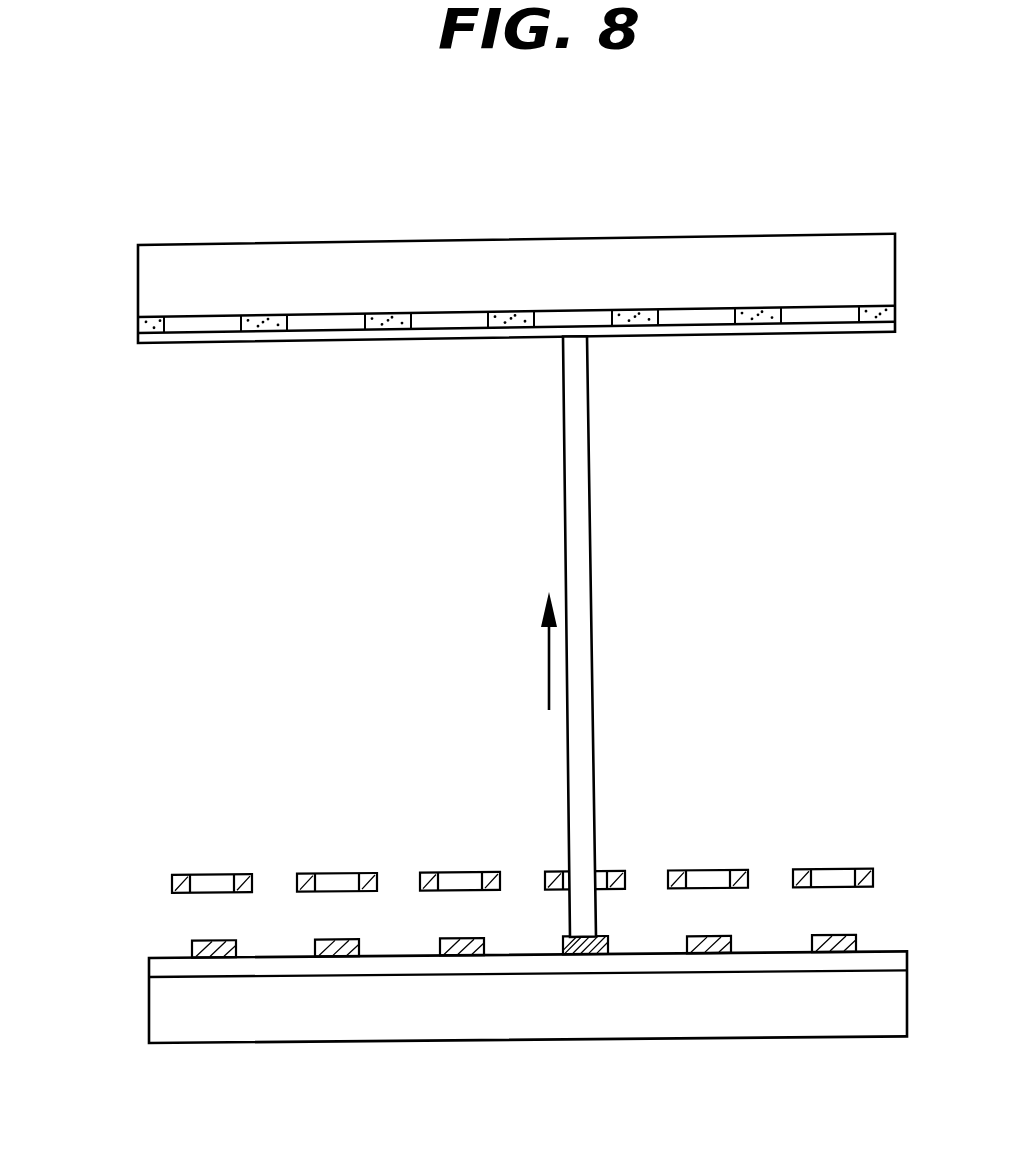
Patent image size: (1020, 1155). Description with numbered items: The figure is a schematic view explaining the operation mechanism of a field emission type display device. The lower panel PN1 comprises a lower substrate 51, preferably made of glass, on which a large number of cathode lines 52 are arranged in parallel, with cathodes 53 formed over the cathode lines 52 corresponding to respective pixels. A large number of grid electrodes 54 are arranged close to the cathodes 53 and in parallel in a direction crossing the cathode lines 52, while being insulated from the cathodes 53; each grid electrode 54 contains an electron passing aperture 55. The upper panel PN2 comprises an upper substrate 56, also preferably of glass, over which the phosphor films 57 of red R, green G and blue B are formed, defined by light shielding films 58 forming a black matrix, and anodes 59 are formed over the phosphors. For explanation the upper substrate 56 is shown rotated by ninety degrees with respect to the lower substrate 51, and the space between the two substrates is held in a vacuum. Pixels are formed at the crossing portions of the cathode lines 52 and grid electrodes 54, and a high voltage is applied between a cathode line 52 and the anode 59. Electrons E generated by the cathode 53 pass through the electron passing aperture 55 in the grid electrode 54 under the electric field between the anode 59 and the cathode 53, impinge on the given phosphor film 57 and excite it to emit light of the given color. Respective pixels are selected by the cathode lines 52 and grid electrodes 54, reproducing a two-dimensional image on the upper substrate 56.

The lower substrate 51 is at (528, 1022).
The cathode lines 52 is at (528, 1024).
The cathodes 53 is at (593, 1011).
The grid electrodes 54 is at (600, 838).
The electron passing apertures 55 is at (522, 844).
The upper substrate 56 is at (516, 257).
The phosphor films 57 is at (516, 221).
The light shielding films 58 is at (516, 238).
The anodes 59 is at (516, 259).
The electrons E is at (591, 503).
The red phosphor film R is at (472, 256).
The green phosphor film G is at (573, 255).
The blue phosphor film B is at (696, 253).
The rear panel PN1 is at (118, 882).
The front panel PN2 is at (108, 233).